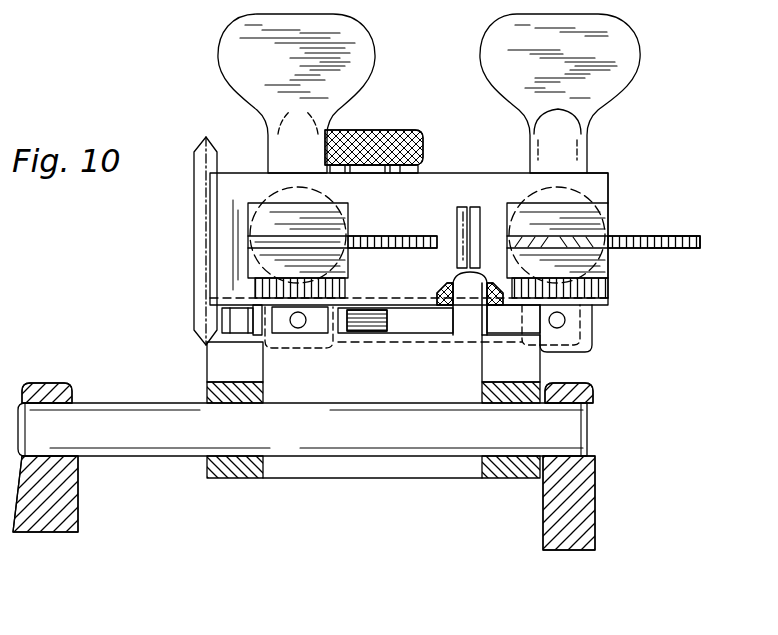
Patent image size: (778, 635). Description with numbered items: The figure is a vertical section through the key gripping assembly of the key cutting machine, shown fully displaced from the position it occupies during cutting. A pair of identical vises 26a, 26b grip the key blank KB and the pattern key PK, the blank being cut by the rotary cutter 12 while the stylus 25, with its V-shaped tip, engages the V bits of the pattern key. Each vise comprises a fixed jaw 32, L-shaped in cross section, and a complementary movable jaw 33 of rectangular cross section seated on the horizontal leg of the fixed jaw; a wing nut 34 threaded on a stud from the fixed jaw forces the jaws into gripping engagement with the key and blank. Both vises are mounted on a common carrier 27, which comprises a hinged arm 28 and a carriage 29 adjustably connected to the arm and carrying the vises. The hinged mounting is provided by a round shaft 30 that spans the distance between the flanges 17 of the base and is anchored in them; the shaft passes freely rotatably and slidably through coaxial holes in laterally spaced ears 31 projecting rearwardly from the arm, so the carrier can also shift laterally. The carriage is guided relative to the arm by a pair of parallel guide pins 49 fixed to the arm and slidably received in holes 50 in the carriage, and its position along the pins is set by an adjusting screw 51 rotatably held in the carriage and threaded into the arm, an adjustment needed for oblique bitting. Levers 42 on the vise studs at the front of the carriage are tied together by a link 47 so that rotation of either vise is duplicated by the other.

The rotary cutter 12 is at (197, 331).
The flanges 17 is at (58, 392).
The stylus 25 is at (482, 203).
The vise 26a is at (243, 240).
The vise 26b is at (598, 223).
The common carrier 27 is at (622, 159).
The hinged arm 28 is at (367, 470).
The carriage 29 is at (437, 194).
The round shaft 30 is at (543, 427).
The ears 31 is at (245, 465).
The fixed jaw 32 is at (260, 263).
The movable jaw 33 is at (263, 220).
The wing nut 34 is at (337, 47).
The lever 42 is at (300, 348).
The link 47 is at (576, 323).
The guide pins 49 is at (227, 317).
The holes 50 is at (453, 279).
The adjusting screw 51 is at (397, 133).
The key blank KB is at (382, 237).
The pattern key PK is at (660, 250).